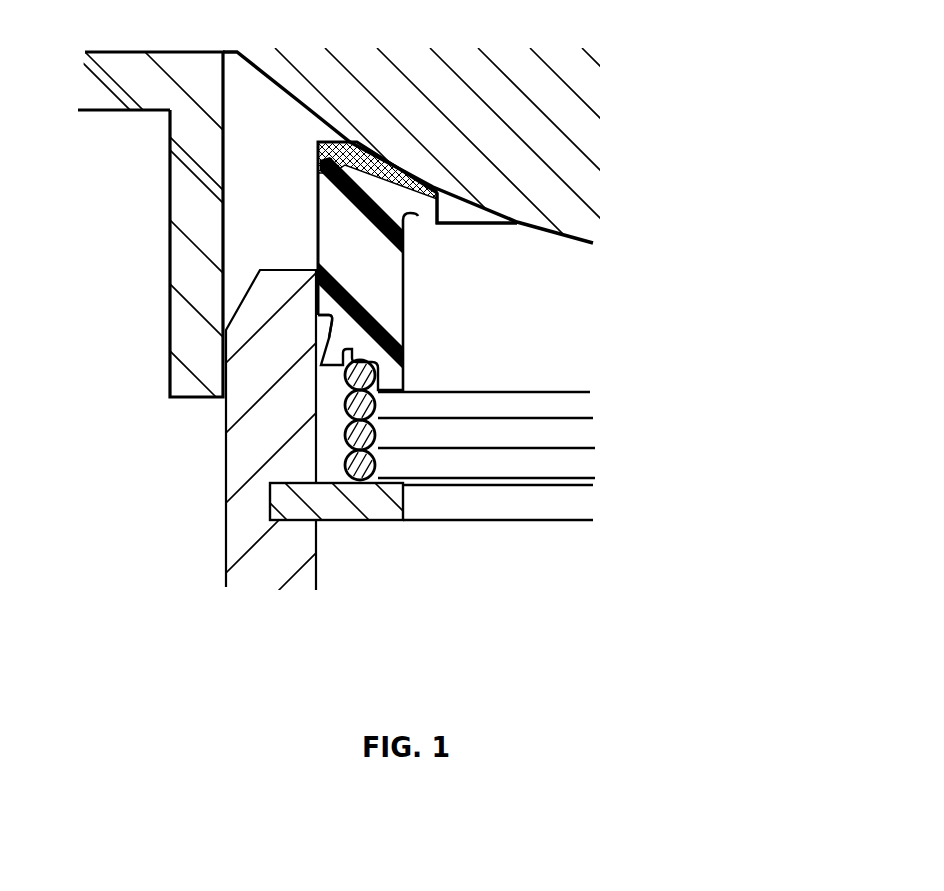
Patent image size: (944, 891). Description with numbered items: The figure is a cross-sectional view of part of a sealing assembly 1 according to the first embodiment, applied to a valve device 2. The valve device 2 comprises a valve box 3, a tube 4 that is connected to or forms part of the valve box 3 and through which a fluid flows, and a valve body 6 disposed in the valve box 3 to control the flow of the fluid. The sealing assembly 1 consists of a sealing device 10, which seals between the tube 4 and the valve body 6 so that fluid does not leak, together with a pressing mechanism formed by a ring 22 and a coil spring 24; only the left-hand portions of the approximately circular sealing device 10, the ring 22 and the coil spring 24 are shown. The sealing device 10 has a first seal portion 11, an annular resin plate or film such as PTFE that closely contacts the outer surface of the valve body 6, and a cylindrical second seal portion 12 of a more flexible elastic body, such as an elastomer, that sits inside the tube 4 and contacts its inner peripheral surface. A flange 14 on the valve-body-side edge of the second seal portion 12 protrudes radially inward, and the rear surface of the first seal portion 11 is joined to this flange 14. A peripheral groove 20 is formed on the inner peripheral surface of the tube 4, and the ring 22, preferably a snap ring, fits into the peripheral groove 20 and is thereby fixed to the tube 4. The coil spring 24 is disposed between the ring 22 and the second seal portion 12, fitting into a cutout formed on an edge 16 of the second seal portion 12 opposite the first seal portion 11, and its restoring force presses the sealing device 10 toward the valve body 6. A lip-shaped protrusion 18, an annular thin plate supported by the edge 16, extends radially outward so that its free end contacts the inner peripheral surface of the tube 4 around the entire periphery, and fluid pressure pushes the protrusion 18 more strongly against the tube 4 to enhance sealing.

The sealing assembly 1 is at (576, 566).
The valve device 2 is at (143, 232).
The valve box 3 is at (97, 112).
The tube 4 is at (237, 463).
The valve body 6 is at (298, 100).
The sealing device 10 is at (306, 252).
The first seal portion 11 is at (317, 159).
The second seal portion 12 is at (405, 308).
The flange 14 is at (420, 216).
The edge 16 is at (405, 375).
The protrusion 18 is at (315, 335).
The peripheral groove 20 is at (272, 500).
The ring 22 is at (375, 510).
The coil spring 24 is at (495, 468).